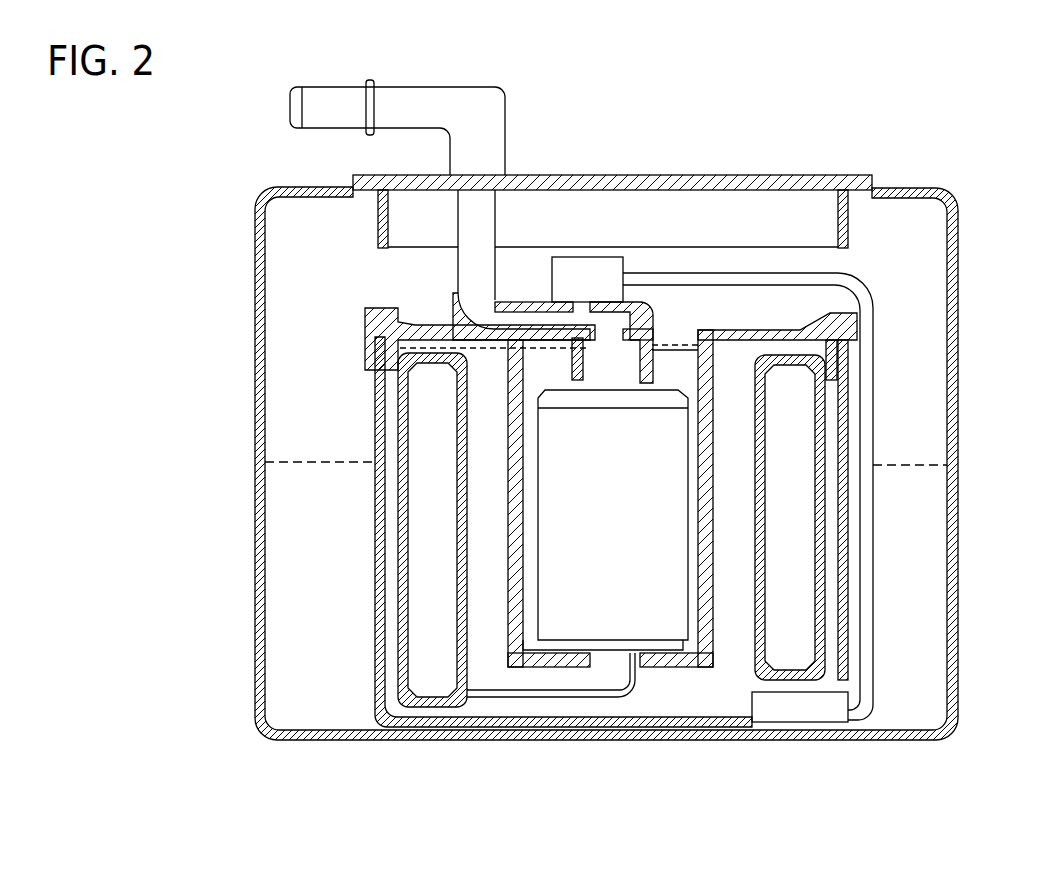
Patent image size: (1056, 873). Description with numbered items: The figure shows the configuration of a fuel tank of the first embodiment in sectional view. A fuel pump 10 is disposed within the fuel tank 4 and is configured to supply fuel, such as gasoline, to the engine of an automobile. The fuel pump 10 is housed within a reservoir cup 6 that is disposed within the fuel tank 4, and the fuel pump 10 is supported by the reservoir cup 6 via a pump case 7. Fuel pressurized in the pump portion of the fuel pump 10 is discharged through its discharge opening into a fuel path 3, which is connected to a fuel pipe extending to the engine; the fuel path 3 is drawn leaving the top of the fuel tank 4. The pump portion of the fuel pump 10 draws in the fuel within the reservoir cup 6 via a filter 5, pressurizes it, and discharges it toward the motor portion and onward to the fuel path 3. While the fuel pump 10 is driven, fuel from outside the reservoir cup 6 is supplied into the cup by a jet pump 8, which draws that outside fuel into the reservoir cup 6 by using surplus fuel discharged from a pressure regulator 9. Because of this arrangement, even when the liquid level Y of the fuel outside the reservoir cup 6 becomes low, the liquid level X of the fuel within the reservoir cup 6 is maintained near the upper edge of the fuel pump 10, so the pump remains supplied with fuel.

The fuel path 3 is at (492, 133).
The fuel tank 4 is at (960, 259).
The filter 5 is at (414, 712).
The reservoir cup 6 is at (848, 547).
The pump case 7 is at (858, 318).
The jet pump 8 is at (806, 712).
The pressure regulator 9 is at (595, 268).
The fuel pump 10 is at (667, 425).
The liquid level X is at (365, 311).
The liquid level Y is at (298, 462).